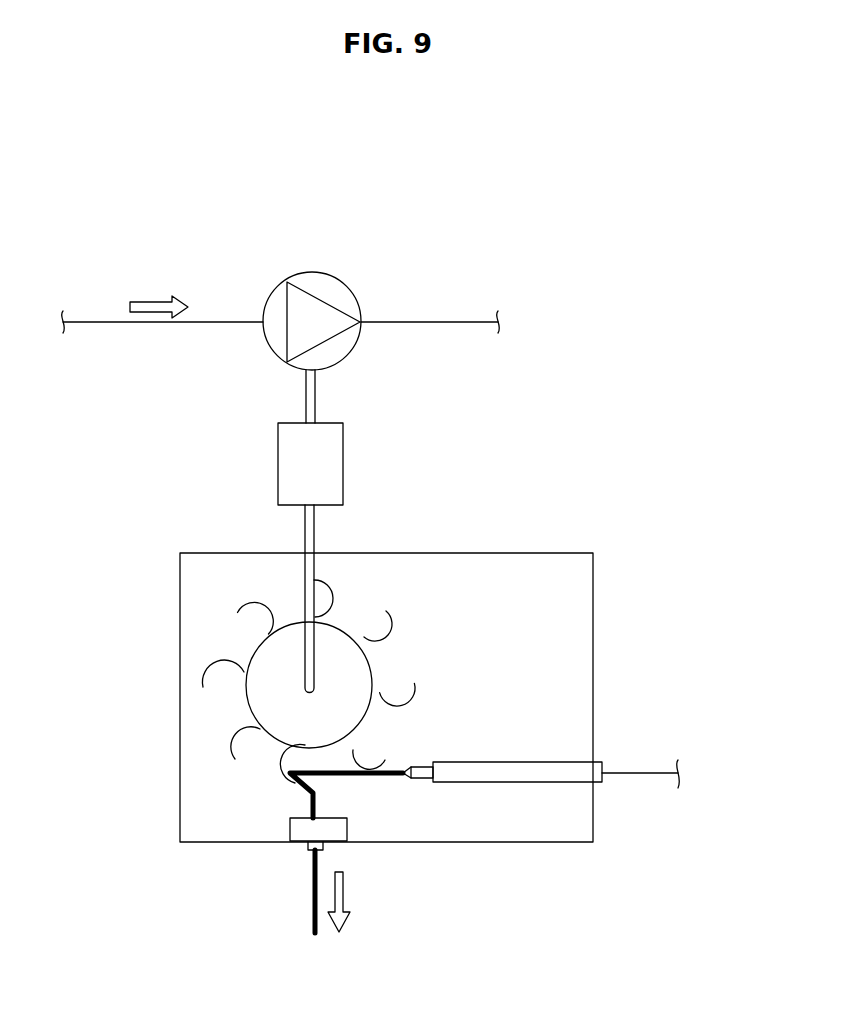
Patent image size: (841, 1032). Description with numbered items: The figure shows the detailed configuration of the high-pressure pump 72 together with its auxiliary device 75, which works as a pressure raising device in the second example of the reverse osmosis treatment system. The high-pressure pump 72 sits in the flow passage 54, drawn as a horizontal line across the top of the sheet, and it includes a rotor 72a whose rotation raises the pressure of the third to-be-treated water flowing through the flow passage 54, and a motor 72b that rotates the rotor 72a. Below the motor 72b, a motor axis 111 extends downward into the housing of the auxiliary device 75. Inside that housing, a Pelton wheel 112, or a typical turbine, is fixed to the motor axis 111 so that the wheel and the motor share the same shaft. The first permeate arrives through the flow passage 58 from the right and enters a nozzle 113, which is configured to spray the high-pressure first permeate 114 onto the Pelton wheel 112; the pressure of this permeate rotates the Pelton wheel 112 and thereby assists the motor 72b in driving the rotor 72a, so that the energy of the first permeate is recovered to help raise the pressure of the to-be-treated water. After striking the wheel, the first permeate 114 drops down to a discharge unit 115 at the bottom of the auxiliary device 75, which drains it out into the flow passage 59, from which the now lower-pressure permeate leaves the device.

The flow passage 54 is at (163, 322).
The high-pressure pump 72 is at (254, 388).
The rotor 72a is at (272, 364).
The motor 72b is at (278, 465).
The motor axis 111 is at (316, 538).
The auxiliary device 75 is at (596, 590).
The Pelton wheel 112 is at (373, 670).
The nozzle 113 is at (517, 762).
The flow passage 58 is at (640, 770).
The first permeate 114 is at (375, 778).
The discharge unit 115 is at (290, 830).
The flow passage 59 is at (313, 890).